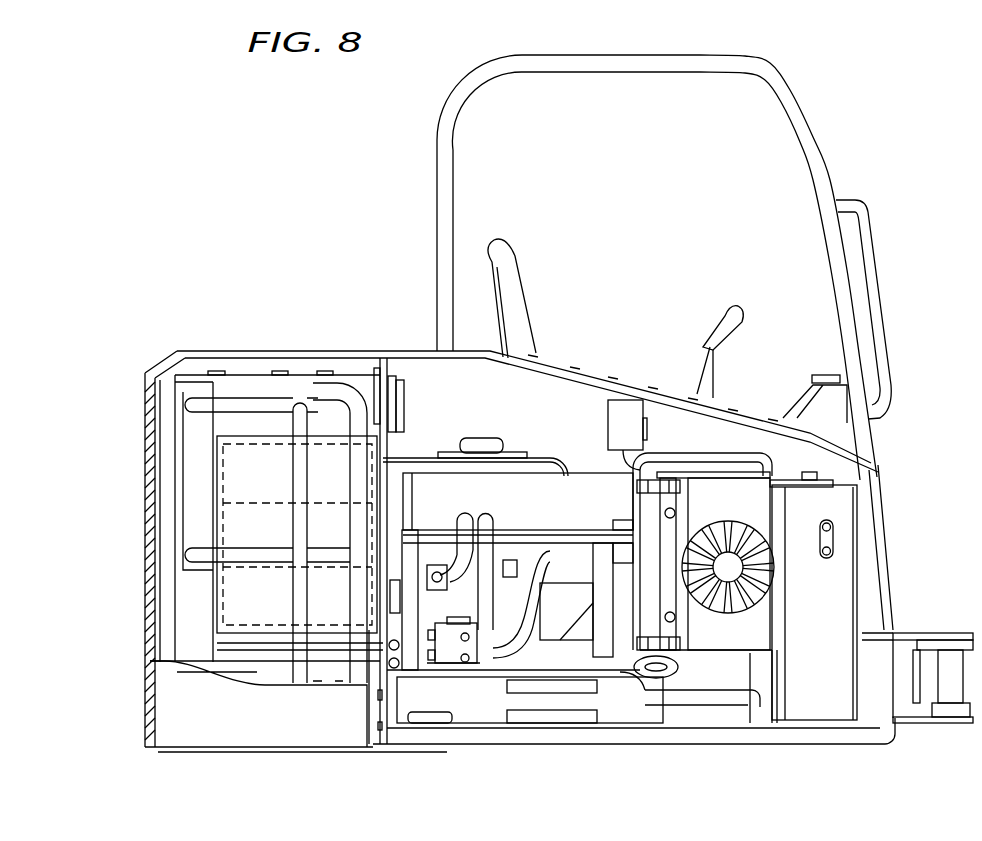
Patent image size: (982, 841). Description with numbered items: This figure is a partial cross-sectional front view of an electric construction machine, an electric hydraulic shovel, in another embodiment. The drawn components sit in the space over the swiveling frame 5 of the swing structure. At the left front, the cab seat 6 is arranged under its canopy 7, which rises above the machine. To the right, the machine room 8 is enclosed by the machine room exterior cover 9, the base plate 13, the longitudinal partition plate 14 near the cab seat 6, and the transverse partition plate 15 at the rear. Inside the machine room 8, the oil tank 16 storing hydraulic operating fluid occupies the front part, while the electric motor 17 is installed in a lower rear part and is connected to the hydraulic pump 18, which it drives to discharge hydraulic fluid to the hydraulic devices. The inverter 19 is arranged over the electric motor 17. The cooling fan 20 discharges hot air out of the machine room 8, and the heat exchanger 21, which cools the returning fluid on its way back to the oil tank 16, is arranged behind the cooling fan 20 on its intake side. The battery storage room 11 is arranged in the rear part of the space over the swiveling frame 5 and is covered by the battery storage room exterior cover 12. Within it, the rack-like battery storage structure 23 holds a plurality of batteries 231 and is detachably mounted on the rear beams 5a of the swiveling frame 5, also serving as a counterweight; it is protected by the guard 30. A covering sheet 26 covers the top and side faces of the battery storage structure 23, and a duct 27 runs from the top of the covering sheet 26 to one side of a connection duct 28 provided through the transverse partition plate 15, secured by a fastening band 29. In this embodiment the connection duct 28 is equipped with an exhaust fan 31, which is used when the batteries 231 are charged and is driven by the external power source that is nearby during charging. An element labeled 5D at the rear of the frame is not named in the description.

The swiveling frame 5 is at (860, 744).
The rear beams 5a is at (278, 672).
The rear support 5D is at (950, 695).
The cab seat 6 is at (499, 240).
The canopy 7 is at (818, 158).
The machine room 8 is at (725, 443).
The machine room exterior cover 9 is at (627, 380).
The battery storage room 11 is at (205, 367).
The battery storage room exterior cover 12 is at (145, 418).
The base plate 13 is at (663, 728).
The longitudinal partition plate 14 is at (547, 383).
The transverse partition plate 15 is at (390, 447).
The oil tank 16 is at (830, 593).
The electric motor 17 is at (505, 613).
The hydraulic pump 18 is at (567, 613).
The inverter 19 is at (585, 500).
The cooling fan 20 is at (767, 567).
The heat exchanger 21 is at (730, 630).
The battery storage structure 23 is at (258, 441).
The covering sheet 26 is at (282, 434).
The duct 27 is at (353, 392).
The connection duct 28 is at (394, 377).
The fastening band 29 is at (378, 377).
The guard 30 is at (176, 377).
The exhaust fan 31 is at (404, 393).
The batteries 231 is at (233, 478).